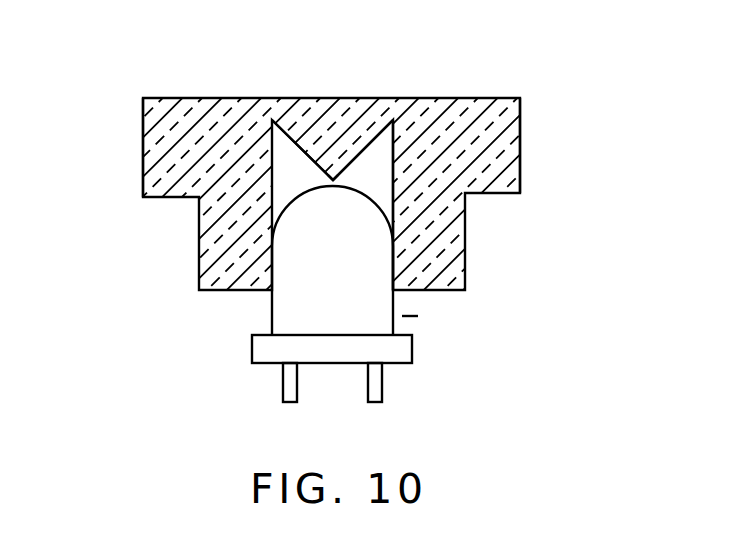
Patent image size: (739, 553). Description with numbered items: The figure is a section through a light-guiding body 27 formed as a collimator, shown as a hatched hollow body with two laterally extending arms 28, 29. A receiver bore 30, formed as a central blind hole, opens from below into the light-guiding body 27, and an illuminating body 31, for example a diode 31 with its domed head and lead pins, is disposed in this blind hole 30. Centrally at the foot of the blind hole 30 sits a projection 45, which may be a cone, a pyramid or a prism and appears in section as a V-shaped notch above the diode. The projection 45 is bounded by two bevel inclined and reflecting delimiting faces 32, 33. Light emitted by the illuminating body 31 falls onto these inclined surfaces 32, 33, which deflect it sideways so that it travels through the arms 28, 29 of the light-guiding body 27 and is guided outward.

The light-guiding body 27 is at (237, 238).
The arm 28 is at (522, 110).
The arm 29 is at (143, 117).
The receiver bore 30 is at (393, 173).
The illuminating body 31 is at (335, 294).
The inclined reflecting surface 32 is at (293, 142).
The inclined reflecting surface 33 is at (335, 170).
The projection 45 is at (334, 172).